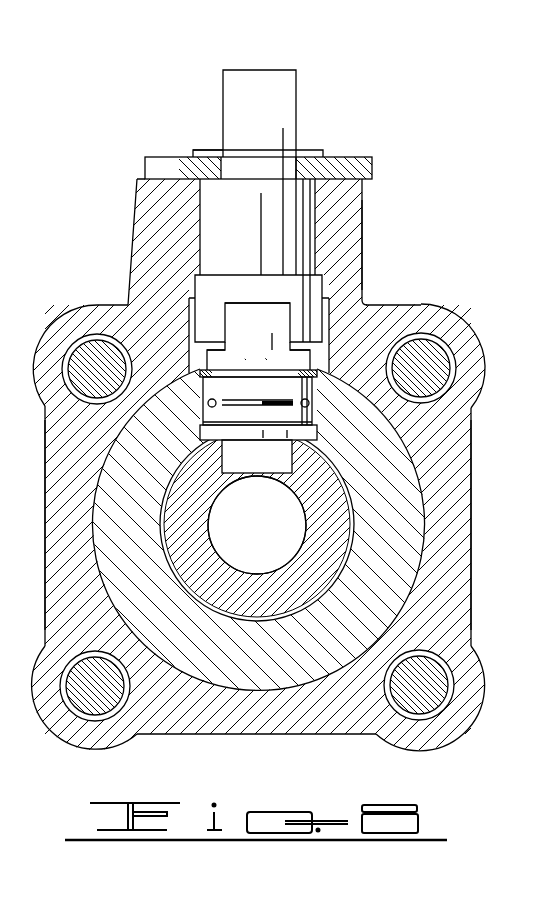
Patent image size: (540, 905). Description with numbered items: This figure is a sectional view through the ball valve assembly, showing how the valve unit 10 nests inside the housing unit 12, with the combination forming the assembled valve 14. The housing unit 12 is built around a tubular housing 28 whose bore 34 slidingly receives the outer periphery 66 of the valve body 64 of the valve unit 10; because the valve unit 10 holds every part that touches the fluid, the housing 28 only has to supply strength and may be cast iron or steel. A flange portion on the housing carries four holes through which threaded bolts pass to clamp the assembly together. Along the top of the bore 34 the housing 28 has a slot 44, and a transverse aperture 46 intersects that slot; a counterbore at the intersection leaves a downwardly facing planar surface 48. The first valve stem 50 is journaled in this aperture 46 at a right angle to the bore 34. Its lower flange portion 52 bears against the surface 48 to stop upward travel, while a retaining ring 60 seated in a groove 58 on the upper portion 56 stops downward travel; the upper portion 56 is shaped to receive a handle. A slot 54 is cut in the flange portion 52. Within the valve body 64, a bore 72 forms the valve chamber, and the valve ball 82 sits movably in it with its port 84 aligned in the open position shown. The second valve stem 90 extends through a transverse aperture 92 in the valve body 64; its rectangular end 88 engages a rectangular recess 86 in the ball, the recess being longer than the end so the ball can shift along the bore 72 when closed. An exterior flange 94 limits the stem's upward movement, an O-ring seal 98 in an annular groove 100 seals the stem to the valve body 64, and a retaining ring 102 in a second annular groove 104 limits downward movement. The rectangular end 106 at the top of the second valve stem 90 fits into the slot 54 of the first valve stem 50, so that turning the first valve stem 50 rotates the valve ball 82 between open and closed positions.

The valve unit 10 is at (440, 510).
The housing unit 12 is at (368, 195).
The mounting flange 14 is at (360, 145).
The tubular housing 28 is at (352, 233).
The bore 34 is at (223, 680).
The slot 44 is at (190, 318).
The aperture 46 is at (206, 205).
The planar surface 48 is at (318, 273).
The first valve stem 50 is at (254, 207).
The lower flange portion 52 is at (240, 280).
The slot 54 is at (247, 302).
The upper portion 56 is at (287, 92).
The groove 58 is at (267, 152).
The retaining ring 60 is at (208, 152).
The valve body 64 is at (113, 580).
The outer periphery 66 is at (105, 510).
The bore 72 is at (245, 610).
The valve ball 82 is at (228, 565).
The port 84 is at (268, 516).
The rectangular recess 86 is at (222, 485).
The rectangular end 88 is at (266, 464).
The second valve stem 90 is at (265, 335).
The aperture 92 is at (310, 403).
The exterior flange 94 is at (312, 432).
The O-ring seal 98 is at (208, 403).
The annular groove 100 is at (255, 403).
The retaining ring 102 is at (195, 372).
The second annular groove 104 is at (275, 370).
The rectangular end 106 is at (247, 320).